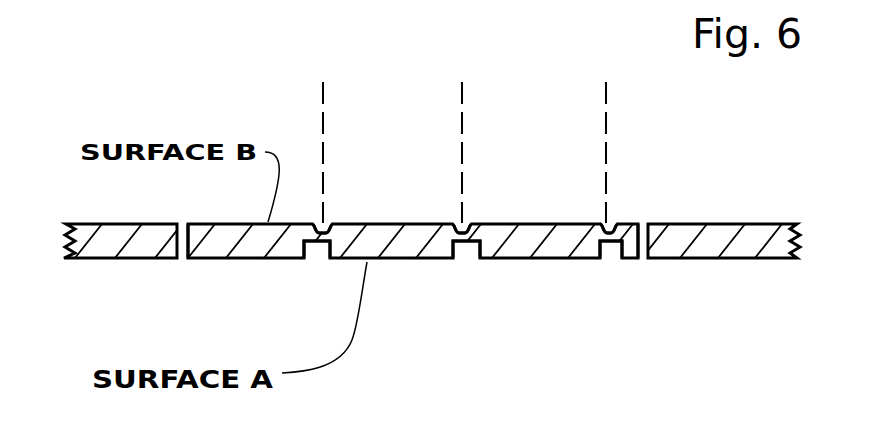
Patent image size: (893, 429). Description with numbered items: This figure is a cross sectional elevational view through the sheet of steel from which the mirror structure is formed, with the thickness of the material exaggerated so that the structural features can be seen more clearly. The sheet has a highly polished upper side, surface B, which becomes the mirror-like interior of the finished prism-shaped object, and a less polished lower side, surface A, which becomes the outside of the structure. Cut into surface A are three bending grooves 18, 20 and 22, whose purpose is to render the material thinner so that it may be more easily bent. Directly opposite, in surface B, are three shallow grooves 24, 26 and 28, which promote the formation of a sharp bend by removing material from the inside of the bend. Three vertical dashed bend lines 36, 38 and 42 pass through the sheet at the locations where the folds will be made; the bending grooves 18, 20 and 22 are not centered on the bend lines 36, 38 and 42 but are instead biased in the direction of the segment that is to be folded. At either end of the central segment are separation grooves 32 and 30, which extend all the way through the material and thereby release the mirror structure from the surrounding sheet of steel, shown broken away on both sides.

The bending groove 18 is at (313, 262).
The bending groove 20 is at (472, 260).
The bending groove 22 is at (613, 262).
The shallow groove 24 is at (327, 220).
The shallow groove 26 is at (466, 221).
The shallow groove 28 is at (612, 222).
The separation groove 30 is at (638, 262).
The separation groove 32 is at (182, 262).
The bend line 36 is at (322, 95).
The bend line 38 is at (462, 118).
The bend line 42 is at (606, 125).